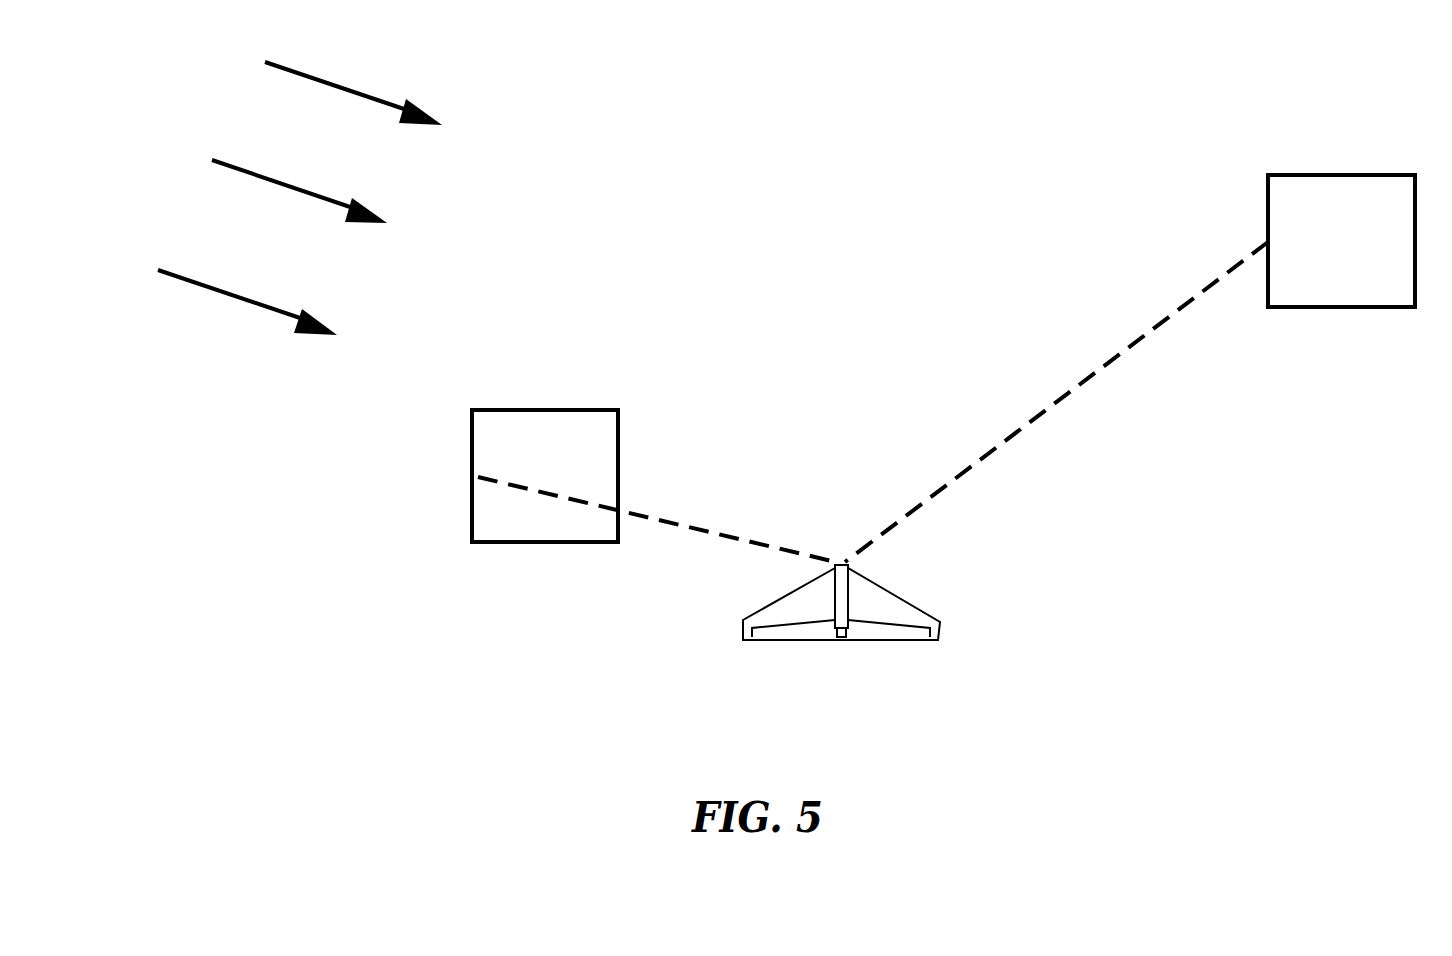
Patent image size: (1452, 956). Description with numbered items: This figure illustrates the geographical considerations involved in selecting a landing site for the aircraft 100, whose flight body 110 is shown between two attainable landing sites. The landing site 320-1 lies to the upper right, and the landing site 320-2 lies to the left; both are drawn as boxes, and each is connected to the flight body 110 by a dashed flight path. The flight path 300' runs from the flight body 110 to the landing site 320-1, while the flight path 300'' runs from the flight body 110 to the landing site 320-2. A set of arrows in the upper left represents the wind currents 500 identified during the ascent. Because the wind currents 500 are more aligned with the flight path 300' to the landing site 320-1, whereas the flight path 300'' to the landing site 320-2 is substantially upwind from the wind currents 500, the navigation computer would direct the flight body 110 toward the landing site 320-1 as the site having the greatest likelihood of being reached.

The wind currents 500 is at (342, 92).
The landing site 320-1 is at (1341, 241).
The landing site 320-2 is at (545, 476).
The flight path 300' is at (1056, 402).
The flight path 300'' is at (659, 492).
The aircraft 100 is at (898, 620).
The flight body 110 is at (841, 632).